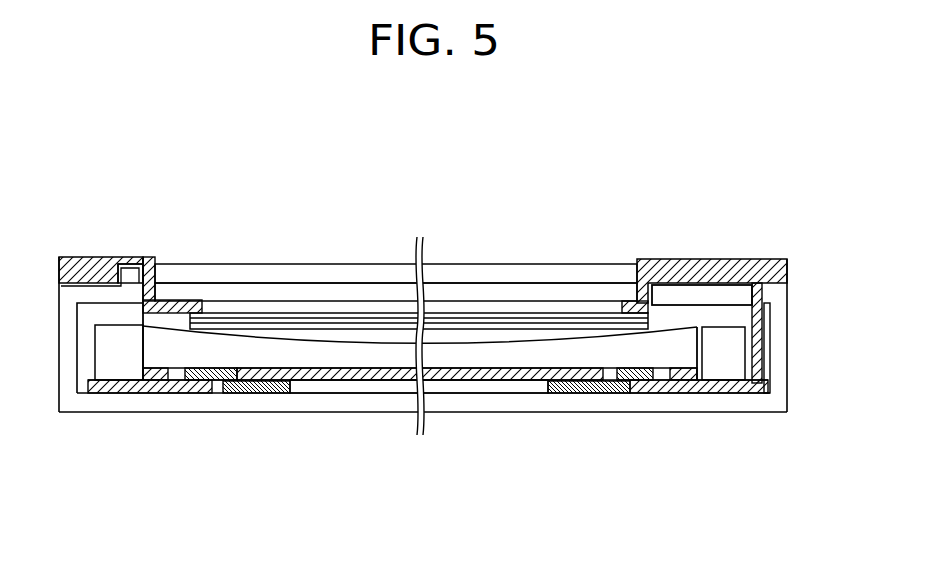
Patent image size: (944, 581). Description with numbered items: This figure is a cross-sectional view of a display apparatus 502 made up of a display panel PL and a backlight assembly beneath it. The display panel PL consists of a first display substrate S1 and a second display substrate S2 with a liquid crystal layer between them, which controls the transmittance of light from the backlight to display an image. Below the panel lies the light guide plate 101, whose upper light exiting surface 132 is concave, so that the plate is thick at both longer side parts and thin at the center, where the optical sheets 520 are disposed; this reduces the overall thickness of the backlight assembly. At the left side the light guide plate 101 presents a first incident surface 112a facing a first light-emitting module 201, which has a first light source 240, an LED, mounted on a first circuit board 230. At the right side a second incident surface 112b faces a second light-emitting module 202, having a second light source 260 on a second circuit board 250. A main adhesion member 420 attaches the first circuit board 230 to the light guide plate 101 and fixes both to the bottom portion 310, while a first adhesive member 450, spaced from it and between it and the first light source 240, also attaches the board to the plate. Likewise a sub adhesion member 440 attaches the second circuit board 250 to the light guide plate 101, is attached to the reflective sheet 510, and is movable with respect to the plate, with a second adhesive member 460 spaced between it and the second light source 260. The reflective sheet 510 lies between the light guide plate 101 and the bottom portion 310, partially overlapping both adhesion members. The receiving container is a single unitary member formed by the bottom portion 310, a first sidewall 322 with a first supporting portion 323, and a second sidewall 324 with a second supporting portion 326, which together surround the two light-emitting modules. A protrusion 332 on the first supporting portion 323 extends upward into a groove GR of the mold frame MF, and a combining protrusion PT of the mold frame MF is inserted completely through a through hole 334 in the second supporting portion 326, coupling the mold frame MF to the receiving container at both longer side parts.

The display apparatus 502 is at (608, 197).
The first supporting portion 323 is at (68, 257).
The protrusion 332 is at (85, 293).
The groove GR is at (129, 280).
The first incident surface 112a is at (138, 343).
The second display substrate S2 is at (222, 272).
The first display substrate S1 is at (273, 290).
The display panel PL is at (288, 200).
The light exiting surface 132 is at (384, 340).
The optical sheets 520 is at (470, 329).
The mold frame MF is at (653, 277).
The second incident surface 112b is at (704, 343).
The second supporting portion 326 is at (721, 292).
The through hole 334 is at (746, 294).
The second sidewall 324 is at (780, 323).
The first sidewall 322 is at (67, 363).
The first circuit board 230 is at (117, 367).
The first light source 240 is at (122, 385).
The first light-emitting module 201 is at (153, 469).
The first adhesive member 450 is at (150, 377).
The main adhesion member 420 is at (256, 385).
The bottom portion 310 is at (340, 402).
The light guide plate 101 is at (390, 362).
The reflective sheet 510 is at (477, 373).
The sub adhesion member 440 is at (582, 387).
The second adhesive member 460 is at (695, 370).
The second circuit board 250 is at (727, 367).
The second light source 260 is at (735, 385).
The second light-emitting module 202 is at (768, 473).
The combining protrusion PT is at (760, 370).